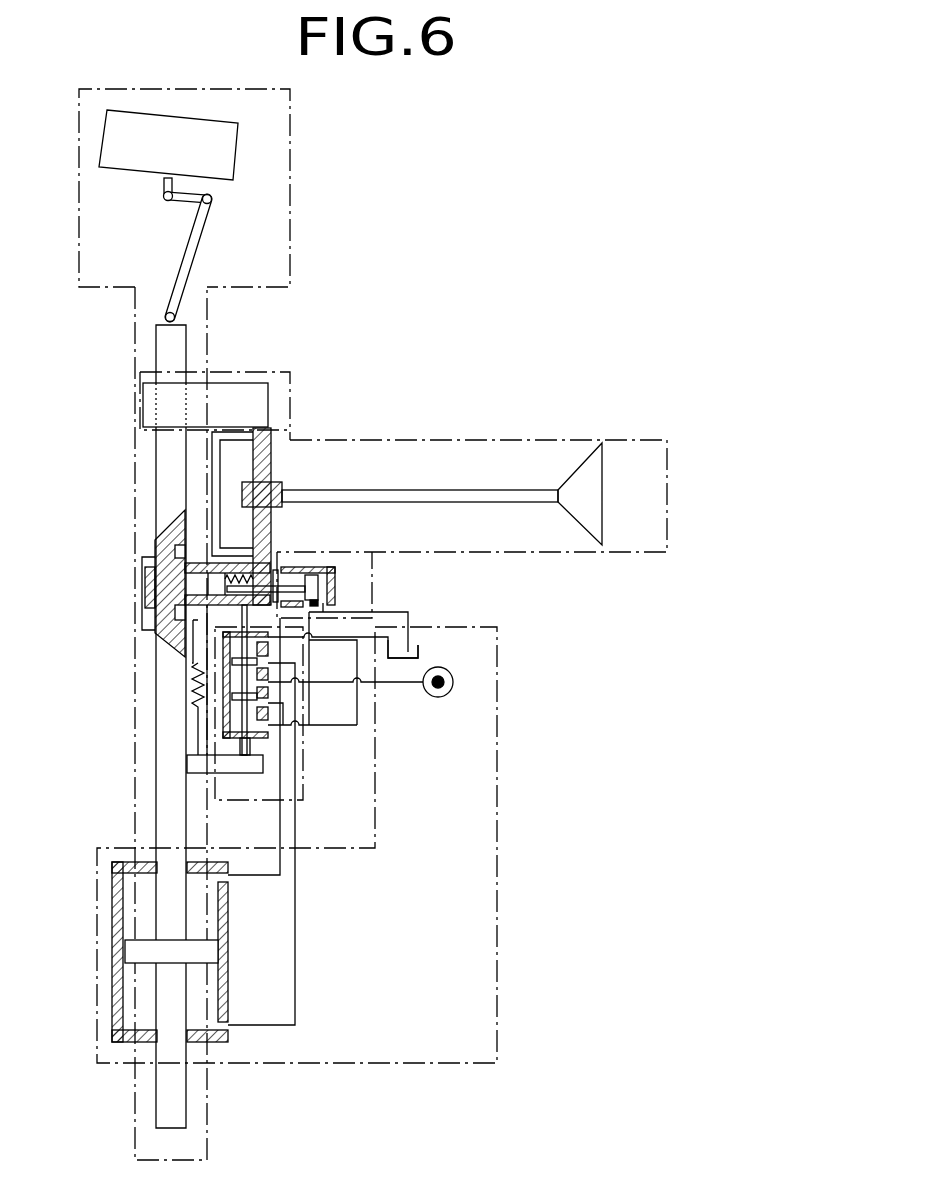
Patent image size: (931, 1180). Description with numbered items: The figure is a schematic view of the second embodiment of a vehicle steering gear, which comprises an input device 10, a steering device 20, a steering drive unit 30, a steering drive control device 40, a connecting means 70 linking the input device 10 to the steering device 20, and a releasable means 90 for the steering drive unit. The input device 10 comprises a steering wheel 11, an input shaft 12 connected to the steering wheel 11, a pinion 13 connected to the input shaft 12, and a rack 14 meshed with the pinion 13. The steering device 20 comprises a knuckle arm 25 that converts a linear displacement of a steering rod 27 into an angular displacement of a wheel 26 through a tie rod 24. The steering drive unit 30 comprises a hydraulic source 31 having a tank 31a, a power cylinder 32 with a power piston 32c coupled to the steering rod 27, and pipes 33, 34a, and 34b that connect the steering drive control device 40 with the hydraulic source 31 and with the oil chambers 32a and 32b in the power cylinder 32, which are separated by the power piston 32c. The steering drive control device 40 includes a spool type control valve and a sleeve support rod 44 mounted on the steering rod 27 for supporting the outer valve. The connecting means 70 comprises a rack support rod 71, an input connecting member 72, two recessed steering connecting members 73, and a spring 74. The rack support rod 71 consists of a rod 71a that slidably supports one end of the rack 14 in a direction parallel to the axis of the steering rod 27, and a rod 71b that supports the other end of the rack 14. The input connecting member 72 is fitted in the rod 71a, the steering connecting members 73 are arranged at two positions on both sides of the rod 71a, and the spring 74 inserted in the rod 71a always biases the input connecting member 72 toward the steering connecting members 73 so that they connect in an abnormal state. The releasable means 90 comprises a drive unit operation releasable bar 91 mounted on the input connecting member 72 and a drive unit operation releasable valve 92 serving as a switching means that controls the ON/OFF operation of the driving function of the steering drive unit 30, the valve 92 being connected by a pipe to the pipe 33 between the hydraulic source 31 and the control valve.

The input device 10 is at (650, 438).
The steering wheel 11 is at (604, 458).
The input shaft 12 is at (443, 488).
The pinion 13 is at (283, 487).
The rack 14 is at (272, 463).
The steering device 20 is at (293, 108).
The tie rod 24 is at (187, 262).
The knuckle arm 25 is at (173, 203).
The wheel 26 is at (237, 172).
The steering rod 27 is at (158, 336).
The steering drive unit 30 is at (498, 652).
The hydraulic source 31 is at (438, 698).
The tank 31a is at (420, 650).
The power cylinder 32 is at (136, 952).
The oil chamber 32a is at (128, 908).
The oil chamber 32b is at (128, 995).
The power piston 32c is at (126, 938).
The pipe 33 is at (396, 686).
The pipe 34a is at (258, 880).
The pipe 34b is at (297, 957).
The steering drive control device 40 is at (305, 793).
The sleeve support rod 44 is at (247, 770).
The connecting means 70 is at (291, 387).
The rack support rod 71 is at (56, 488).
The rod 71a is at (142, 583).
The rod 71b is at (143, 410).
The input connecting member 72 is at (219, 580).
The steering connecting members 73 is at (157, 562).
The spring 74 is at (259, 573).
The releasable means for drive unit operation 90 is at (372, 571).
The drive unit operation releasable bar 91 is at (293, 583).
The drive unit operation releasable valve 92 is at (336, 584).